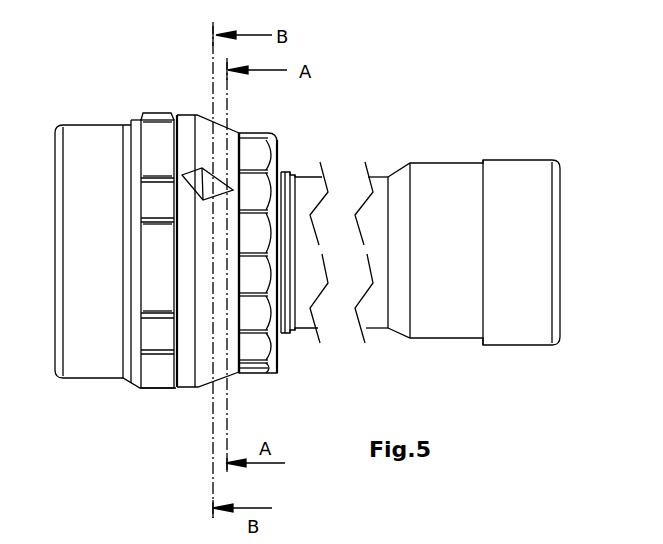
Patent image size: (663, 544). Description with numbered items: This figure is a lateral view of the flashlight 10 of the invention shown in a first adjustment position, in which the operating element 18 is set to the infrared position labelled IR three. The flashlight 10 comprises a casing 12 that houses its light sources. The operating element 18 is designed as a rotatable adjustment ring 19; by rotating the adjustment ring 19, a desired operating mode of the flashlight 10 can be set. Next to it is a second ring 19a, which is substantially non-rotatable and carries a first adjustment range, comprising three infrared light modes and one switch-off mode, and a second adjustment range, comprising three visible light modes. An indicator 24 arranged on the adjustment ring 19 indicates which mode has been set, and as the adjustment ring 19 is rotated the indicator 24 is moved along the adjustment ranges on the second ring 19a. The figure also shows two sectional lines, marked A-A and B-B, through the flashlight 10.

The flashlight 10 is at (497, 88).
The casing 12 is at (433, 163).
The operating element 18 is at (203, 103).
The adjustment ring 19 is at (188, 120).
The second ring 19a is at (252, 236).
The indicator 24 is at (200, 167).